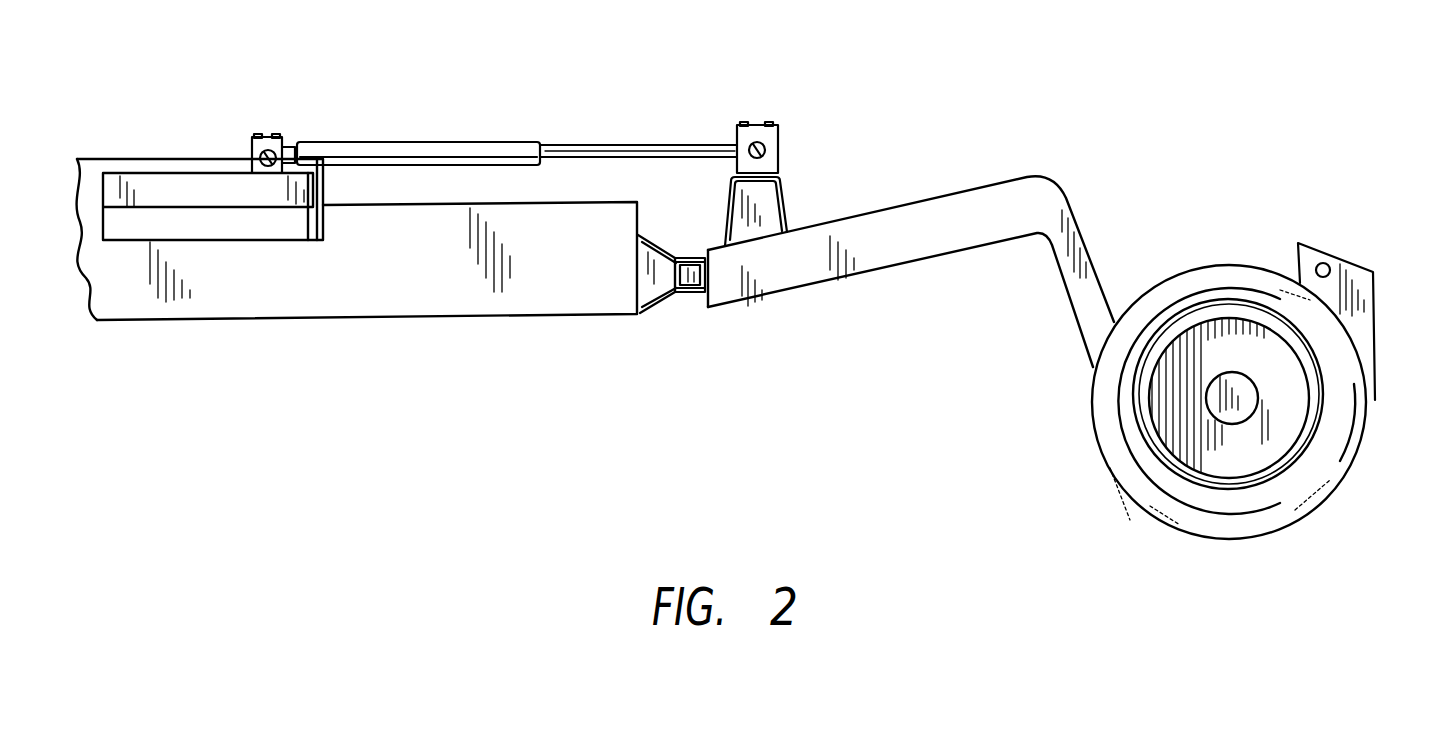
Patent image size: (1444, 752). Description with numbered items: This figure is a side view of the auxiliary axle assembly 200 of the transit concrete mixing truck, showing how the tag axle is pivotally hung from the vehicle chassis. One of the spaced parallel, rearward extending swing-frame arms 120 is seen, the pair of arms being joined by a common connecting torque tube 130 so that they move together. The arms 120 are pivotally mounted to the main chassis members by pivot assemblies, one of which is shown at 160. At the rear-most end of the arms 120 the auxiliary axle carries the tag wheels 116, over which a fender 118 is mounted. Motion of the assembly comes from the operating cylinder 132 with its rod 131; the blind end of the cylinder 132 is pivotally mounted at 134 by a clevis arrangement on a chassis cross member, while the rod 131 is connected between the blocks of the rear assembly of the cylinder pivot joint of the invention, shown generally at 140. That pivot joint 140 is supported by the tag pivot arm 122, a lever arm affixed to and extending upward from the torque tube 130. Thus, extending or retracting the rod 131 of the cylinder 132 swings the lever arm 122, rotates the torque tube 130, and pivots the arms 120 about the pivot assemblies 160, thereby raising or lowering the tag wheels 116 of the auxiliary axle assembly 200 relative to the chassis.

The tag wheels 116 is at (1107, 465).
The fender 118 is at (1357, 265).
The swing-frame arm 120 is at (984, 188).
The tag pivot arm 122 is at (783, 190).
The torque tube 130 is at (337, 310).
The rod 131 is at (583, 143).
The operating cylinder 132 is at (368, 143).
The pivotal mounting of cylinder blind end 134 is at (260, 138).
The cylinder pivot joint 140 is at (805, 80).
The pivot assembly 160 is at (670, 330).
The auxiliary axle assembly 200 is at (928, 367).